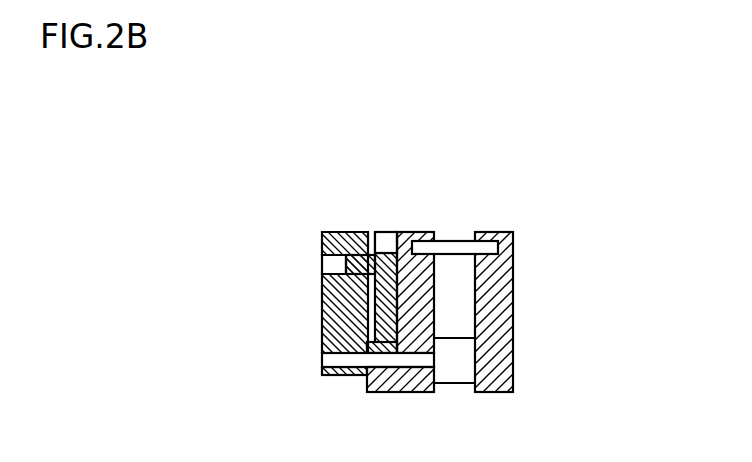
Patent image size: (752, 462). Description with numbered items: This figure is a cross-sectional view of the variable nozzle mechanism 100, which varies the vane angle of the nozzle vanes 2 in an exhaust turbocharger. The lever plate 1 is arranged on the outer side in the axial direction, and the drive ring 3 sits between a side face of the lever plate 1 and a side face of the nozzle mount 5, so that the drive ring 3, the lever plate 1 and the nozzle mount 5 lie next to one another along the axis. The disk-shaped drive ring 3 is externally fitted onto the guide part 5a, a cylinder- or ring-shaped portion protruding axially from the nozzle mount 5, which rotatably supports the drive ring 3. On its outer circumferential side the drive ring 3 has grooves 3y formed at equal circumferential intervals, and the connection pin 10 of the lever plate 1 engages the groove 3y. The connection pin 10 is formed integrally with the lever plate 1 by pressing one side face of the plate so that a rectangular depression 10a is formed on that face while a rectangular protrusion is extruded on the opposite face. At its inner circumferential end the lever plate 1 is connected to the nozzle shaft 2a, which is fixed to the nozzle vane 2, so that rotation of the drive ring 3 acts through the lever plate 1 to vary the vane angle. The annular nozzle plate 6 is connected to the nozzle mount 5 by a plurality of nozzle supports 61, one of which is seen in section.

The variable nozzle mechanism 100 is at (423, 275).
The lever plate 1 is at (347, 323).
The connection pin 10 is at (380, 262).
The rectangular depression 10a is at (343, 270).
The nozzle mount 5 is at (404, 262).
The guide part 5a is at (387, 341).
The drive ring 3 is at (397, 210).
The groove 3y is at (383, 231).
The nozzle plate 6 is at (499, 232).
The nozzle support 61 is at (453, 247).
The nozzle vane 2 is at (458, 360).
The nozzle shaft 2a is at (393, 360).